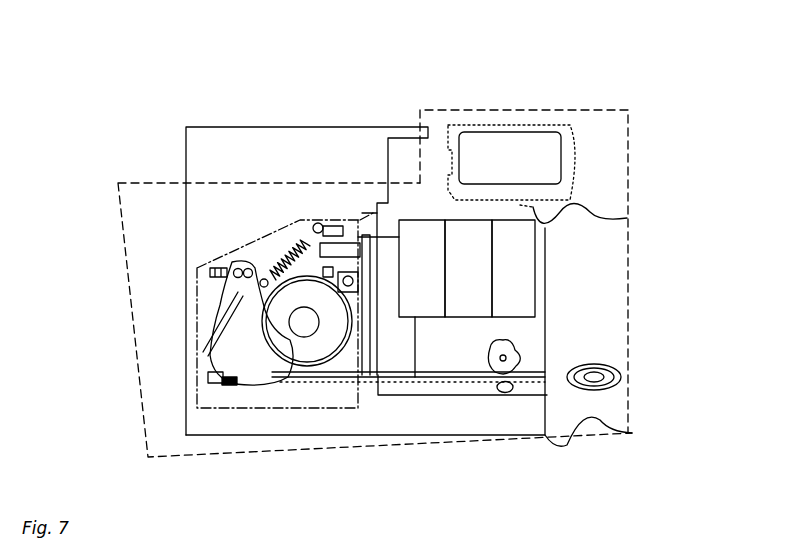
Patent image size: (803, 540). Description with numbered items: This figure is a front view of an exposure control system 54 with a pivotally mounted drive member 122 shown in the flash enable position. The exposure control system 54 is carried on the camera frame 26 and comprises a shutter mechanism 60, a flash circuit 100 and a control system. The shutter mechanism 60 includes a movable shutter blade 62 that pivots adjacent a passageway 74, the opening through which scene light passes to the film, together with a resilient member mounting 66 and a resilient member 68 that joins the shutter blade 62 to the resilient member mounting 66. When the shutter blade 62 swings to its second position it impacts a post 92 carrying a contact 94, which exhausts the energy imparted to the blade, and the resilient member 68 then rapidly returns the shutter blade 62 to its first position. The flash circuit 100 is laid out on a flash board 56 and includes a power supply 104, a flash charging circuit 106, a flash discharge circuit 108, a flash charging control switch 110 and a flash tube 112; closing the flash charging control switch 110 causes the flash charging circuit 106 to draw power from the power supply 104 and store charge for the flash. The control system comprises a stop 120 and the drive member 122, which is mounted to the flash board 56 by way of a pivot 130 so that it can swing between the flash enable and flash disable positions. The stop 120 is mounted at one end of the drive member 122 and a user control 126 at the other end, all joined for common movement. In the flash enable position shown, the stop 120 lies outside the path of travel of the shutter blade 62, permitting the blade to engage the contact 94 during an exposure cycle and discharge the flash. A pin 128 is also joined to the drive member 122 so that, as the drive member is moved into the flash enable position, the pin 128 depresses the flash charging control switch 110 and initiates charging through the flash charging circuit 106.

The frame 26 is at (604, 431).
The exposure control system 54 is at (655, 260).
The flash board 56 is at (587, 216).
The shutter mechanism 60 is at (263, 412).
The shutter blade 62 is at (248, 323).
The resilient member mounting 66 is at (358, 250).
The resilient member 68 is at (283, 257).
The passageway 74 is at (307, 321).
The post 92 is at (208, 380).
The contact 94 is at (224, 384).
The flash circuit 100 is at (519, 108).
The power supply 104 is at (525, 277).
The flash charging circuit 106 is at (480, 277).
The flash discharge circuit 108 is at (432, 277).
The flash charging control switch 110 is at (520, 368).
The flash tube 112 is at (511, 162).
The stop 120 is at (230, 385).
The drive member 122 is at (374, 374).
The user control 126 is at (594, 372).
The pin 128 is at (513, 390).
The pivot 130 is at (313, 380).